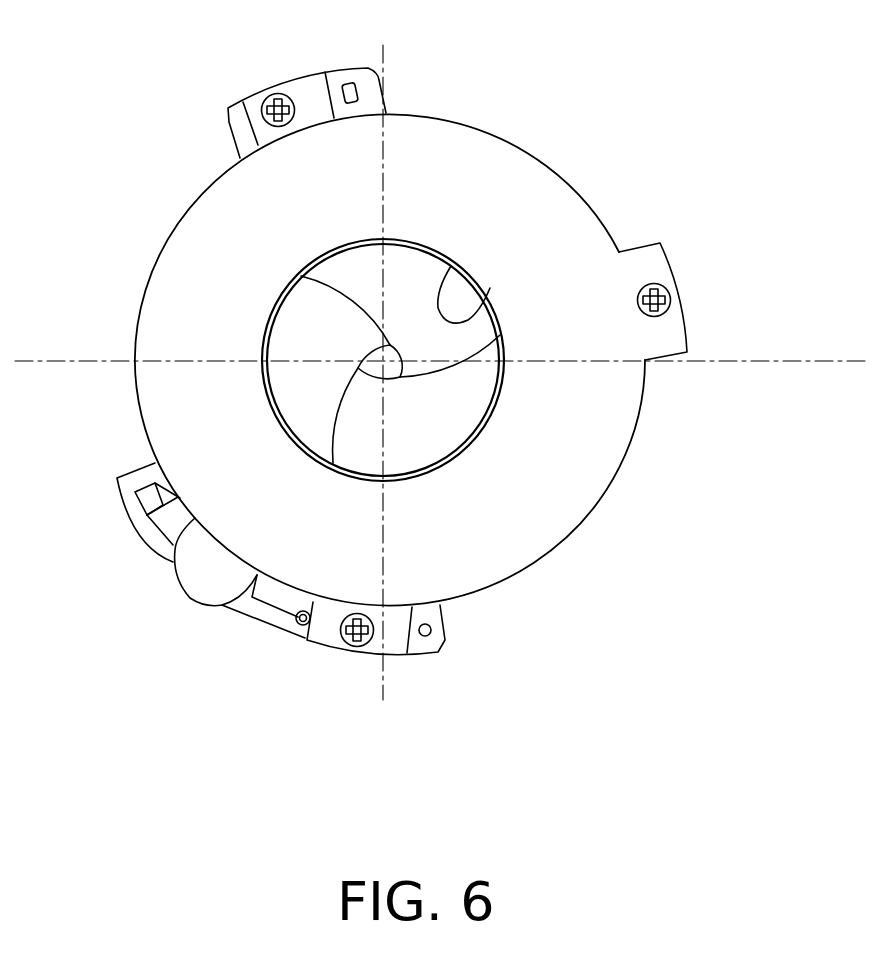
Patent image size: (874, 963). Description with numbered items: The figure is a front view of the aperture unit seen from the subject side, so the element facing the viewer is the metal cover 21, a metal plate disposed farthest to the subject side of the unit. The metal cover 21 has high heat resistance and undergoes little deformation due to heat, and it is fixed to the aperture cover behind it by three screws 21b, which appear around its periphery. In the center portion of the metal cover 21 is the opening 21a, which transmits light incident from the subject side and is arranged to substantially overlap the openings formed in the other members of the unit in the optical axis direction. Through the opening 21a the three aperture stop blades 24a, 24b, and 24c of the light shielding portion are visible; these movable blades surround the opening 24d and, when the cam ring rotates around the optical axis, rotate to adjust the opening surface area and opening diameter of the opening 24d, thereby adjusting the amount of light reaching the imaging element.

The metal cover 21 is at (414, 127).
The opening 21a is at (480, 305).
The screws 21b is at (270, 100).
The aperture stop blade 24a is at (403, 287).
The aperture stop blade 24b is at (447, 395).
The aperture stop blade 24c is at (313, 335).
The opening 24d is at (384, 363).